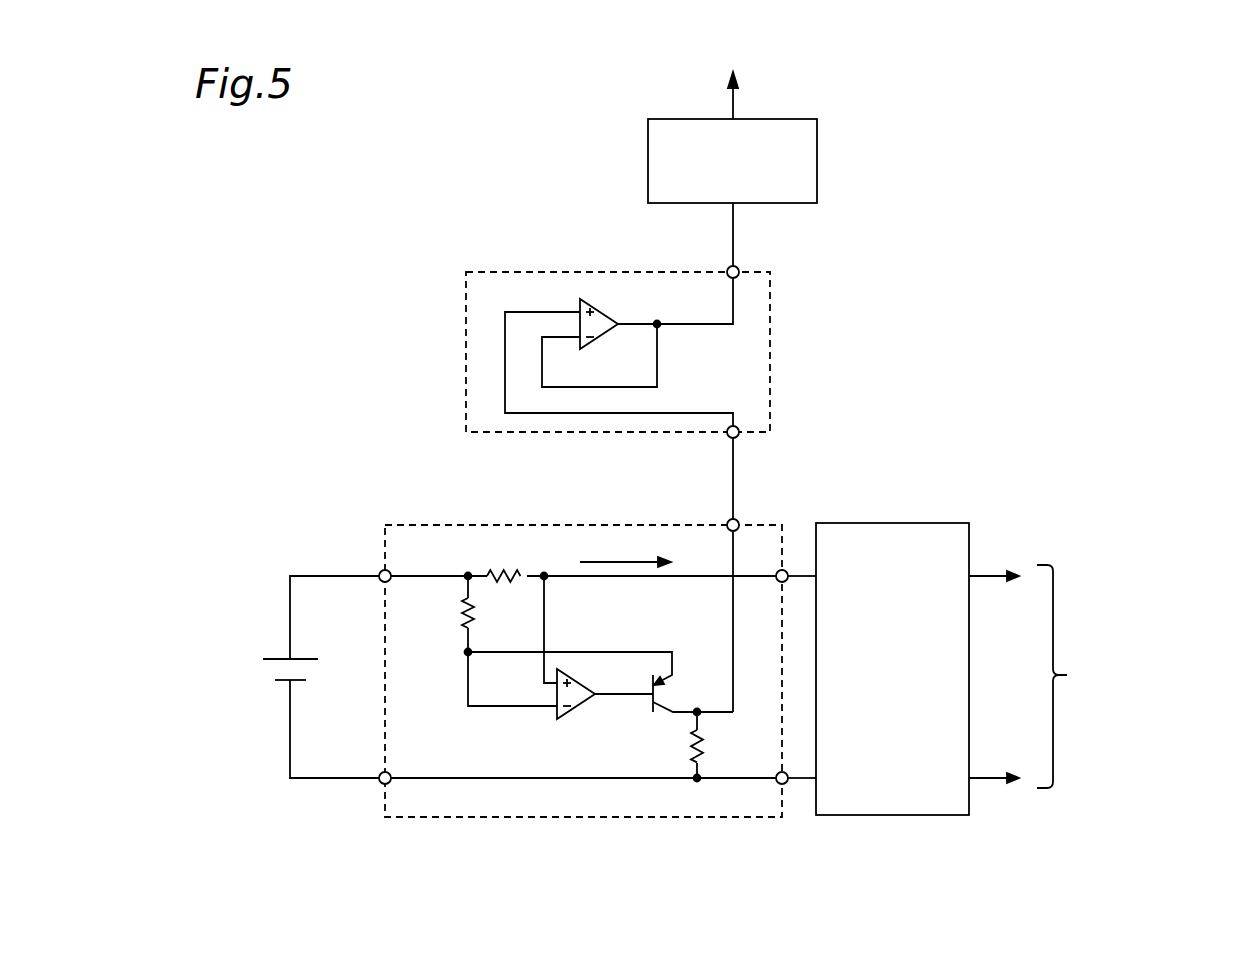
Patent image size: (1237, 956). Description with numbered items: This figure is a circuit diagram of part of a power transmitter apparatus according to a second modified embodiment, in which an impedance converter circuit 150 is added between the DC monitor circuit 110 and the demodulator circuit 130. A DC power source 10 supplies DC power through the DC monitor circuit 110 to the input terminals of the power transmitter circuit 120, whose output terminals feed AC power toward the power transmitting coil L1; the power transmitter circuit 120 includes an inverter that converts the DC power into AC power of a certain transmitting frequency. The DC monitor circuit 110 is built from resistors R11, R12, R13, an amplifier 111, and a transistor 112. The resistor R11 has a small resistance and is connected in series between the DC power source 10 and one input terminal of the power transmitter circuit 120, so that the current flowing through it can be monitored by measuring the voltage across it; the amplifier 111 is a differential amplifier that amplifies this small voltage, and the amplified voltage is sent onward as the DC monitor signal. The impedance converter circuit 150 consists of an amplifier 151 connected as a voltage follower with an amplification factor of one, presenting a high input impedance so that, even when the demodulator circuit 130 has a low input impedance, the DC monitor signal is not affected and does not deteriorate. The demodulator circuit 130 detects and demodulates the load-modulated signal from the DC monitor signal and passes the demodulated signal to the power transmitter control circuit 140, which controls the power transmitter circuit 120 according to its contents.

The DC power source 10 is at (278, 657).
The DC monitor circuit 110 is at (570, 650).
The amplifier 111 is at (568, 716).
The transistor 112 is at (650, 713).
The resistor R11 is at (492, 568).
The resistor R12 is at (458, 619).
The resistor R13 is at (710, 738).
The power transmitter circuit 120 is at (879, 523).
The demodulator circuit 130 is at (648, 175).
The power transmitter control circuit 140 is at (732, 67).
The impedance converter circuit 150 is at (542, 334).
The amplifier 151 is at (619, 352).
The power transmitting coil L1 is at (1094, 676).